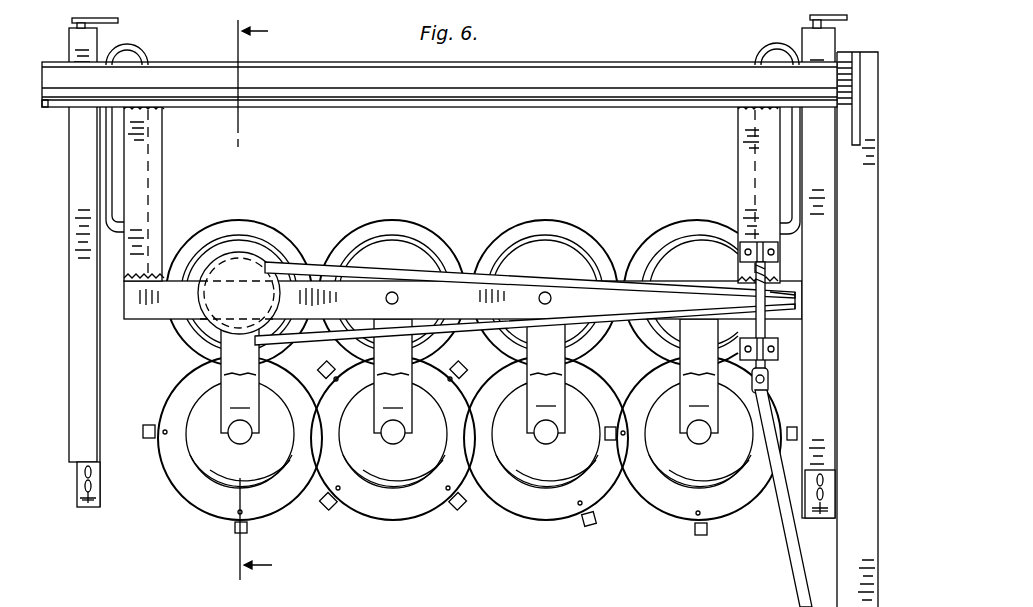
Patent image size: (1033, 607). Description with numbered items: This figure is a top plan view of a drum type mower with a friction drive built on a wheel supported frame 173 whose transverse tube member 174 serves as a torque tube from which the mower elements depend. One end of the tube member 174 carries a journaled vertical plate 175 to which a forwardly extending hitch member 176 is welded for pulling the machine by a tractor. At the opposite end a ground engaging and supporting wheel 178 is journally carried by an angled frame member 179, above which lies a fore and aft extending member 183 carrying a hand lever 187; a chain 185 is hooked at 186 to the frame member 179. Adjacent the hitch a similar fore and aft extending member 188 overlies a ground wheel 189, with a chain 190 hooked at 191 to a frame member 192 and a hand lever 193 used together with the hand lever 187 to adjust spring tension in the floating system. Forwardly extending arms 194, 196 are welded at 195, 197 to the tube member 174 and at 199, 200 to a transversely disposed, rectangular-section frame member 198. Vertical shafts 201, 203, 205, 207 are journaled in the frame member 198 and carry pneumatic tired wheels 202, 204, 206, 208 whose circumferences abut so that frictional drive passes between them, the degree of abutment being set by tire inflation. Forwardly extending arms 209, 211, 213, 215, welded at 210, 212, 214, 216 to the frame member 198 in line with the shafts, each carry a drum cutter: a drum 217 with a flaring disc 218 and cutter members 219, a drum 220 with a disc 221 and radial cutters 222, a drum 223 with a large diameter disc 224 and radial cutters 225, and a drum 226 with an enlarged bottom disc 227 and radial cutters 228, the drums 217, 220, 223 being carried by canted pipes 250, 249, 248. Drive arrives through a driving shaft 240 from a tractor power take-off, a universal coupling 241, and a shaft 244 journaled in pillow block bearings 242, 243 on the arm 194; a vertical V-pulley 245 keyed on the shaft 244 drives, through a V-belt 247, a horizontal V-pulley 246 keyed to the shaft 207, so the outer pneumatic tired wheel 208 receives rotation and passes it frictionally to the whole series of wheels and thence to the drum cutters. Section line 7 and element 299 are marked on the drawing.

The wheel supported frame 173 is at (388, 57).
The tube member 174 is at (614, 62).
The plate 175 is at (862, 90).
The hitch member 176 is at (878, 598).
The ground engaging and supporting wheel 178 is at (145, 52).
The frame member 179 is at (100, 478).
The fore and aft extending member 183 is at (72, 345).
The chain 185 is at (85, 475).
The hook point 186 is at (90, 507).
The hand lever 187 is at (118, 20).
The fore and aft extending member 188 is at (825, 346).
The ground wheel 189 is at (765, 48).
The chain 190 is at (825, 480).
The hook point 191 is at (830, 518).
The frame member 192 is at (835, 502).
The hand lever 193 is at (847, 18).
The forwardly extending arm 194 is at (746, 150).
The weld 195 is at (742, 115).
The forwardly extending arm 196 is at (162, 143).
The weld 197 is at (125, 110).
The transversely disposed frame member 198 is at (156, 320).
The weld 199 is at (740, 258).
The weld 200 is at (162, 268).
The vertical shaft 201 is at (712, 290).
The pneumatic tired wheel 202 is at (640, 232).
The vertical shaft 203 is at (548, 294).
The pneumatic tired wheel 204 is at (535, 232).
The vertical shaft 205 is at (396, 294).
The pneumatic tired wheel 206 is at (402, 232).
The vertical shaft 207 is at (243, 295).
The pneumatic tired wheel 208 is at (266, 232).
The forwardly extending arm 209 is at (699, 394).
The weld 210 is at (699, 376).
The forwardly extending arm 211 is at (546, 394).
The weld 212 is at (546, 376).
The forwardly extending arm 213 is at (393, 396).
The weld 214 is at (393, 376).
The forwardly extending arm 215 is at (240, 396).
The weld 216 is at (240, 376).
The drum or sleeve member 217 is at (720, 490).
The disc 218 is at (662, 500).
The cutter members 219 is at (700, 535).
The drum 220 is at (548, 488).
The disc 221 is at (512, 503).
The radial cutters 222 is at (588, 518).
The drum 223 is at (392, 490).
The disc 224 is at (355, 505).
The radial cutters 225 is at (458, 505).
The drum 226 is at (228, 490).
The bottom disc 227 is at (268, 510).
The radial cutters 228 is at (236, 533).
The driving shaft 240 is at (802, 578).
The universal coupling 241 is at (770, 386).
The pillow block bearing 242 is at (772, 347).
The pillow block bearing 243 is at (772, 252).
The shaft 244 is at (766, 268).
The V-pulley 245 is at (797, 296).
The V-pulley 246 is at (238, 270).
The V-belt 247 is at (318, 265).
The pipe 248 is at (398, 440).
The pipe 249 is at (551, 440).
The pipe 250 is at (704, 440).
The pin 299 is at (238, 440).
The section line 7 is at (265, 300).